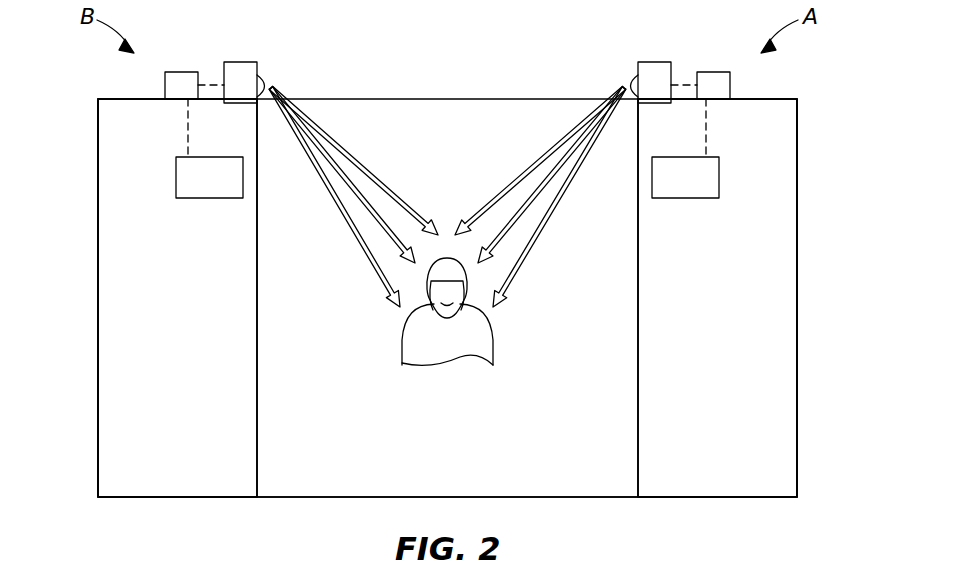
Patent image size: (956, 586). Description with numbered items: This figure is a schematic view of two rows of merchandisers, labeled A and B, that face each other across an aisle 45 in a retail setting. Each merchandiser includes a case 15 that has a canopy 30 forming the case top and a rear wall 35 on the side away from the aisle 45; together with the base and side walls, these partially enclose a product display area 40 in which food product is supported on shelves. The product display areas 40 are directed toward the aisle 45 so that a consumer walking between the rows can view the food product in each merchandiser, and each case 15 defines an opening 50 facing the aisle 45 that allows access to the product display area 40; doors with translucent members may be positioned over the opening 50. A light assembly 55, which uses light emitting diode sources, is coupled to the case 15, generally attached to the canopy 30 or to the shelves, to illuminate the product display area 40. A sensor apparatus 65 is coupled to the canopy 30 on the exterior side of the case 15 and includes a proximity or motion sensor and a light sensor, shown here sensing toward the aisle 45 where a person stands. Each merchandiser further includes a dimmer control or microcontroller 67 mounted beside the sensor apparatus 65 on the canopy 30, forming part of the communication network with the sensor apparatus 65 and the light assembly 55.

The case 15 is at (98, 99).
The canopy 30 is at (118, 99).
The rear wall 35 is at (98, 298).
The product display area 40 is at (447, 298).
The aisle 45 is at (348, 497).
The opening 50 is at (257, 355).
The light assembly 55 is at (235, 198).
The sensor apparatus 65 is at (240, 62).
The dimmer control or microcontroller 67 is at (182, 72).